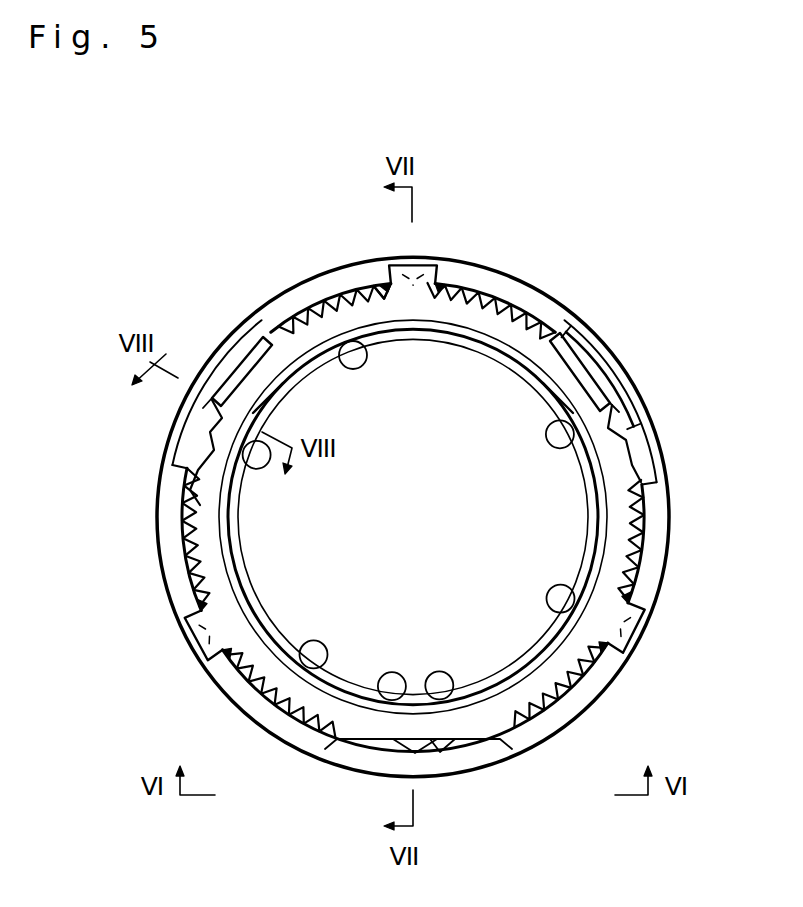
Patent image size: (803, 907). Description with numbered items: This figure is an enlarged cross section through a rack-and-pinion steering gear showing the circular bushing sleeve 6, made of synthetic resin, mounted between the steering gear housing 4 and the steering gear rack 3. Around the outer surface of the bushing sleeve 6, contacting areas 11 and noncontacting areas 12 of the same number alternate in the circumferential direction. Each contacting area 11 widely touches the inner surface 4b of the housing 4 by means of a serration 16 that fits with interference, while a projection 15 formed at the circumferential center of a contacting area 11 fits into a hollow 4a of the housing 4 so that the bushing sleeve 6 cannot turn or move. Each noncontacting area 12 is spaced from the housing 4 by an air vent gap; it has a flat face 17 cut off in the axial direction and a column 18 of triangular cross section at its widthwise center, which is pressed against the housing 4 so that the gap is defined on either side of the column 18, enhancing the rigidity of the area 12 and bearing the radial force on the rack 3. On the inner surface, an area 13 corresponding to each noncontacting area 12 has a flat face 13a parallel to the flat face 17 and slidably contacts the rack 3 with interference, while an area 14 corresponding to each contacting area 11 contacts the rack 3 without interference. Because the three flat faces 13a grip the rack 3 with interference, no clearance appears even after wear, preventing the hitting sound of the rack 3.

The steering gear rack 3 is at (401, 531).
The steering gear housing 4 is at (248, 325).
The hollow 4a is at (430, 240).
The inner surface 4b is at (178, 594).
The bushing sleeve 6 is at (556, 301).
The contacting area 11 is at (513, 301).
The noncontacting area 12 is at (632, 447).
The area 13 is at (255, 440).
The flat face 13a is at (583, 420).
The area 14 is at (330, 345).
The projection 15 is at (415, 262).
The serration 16 is at (358, 283).
The flat face 17 is at (578, 345).
The column 18 is at (215, 400).